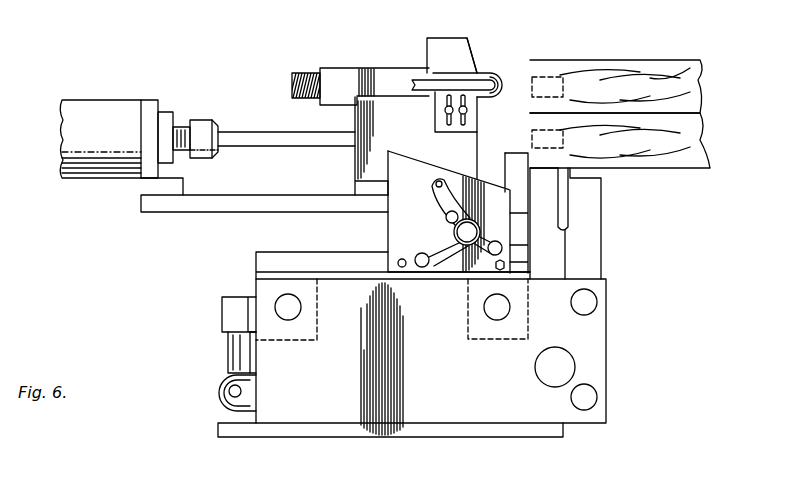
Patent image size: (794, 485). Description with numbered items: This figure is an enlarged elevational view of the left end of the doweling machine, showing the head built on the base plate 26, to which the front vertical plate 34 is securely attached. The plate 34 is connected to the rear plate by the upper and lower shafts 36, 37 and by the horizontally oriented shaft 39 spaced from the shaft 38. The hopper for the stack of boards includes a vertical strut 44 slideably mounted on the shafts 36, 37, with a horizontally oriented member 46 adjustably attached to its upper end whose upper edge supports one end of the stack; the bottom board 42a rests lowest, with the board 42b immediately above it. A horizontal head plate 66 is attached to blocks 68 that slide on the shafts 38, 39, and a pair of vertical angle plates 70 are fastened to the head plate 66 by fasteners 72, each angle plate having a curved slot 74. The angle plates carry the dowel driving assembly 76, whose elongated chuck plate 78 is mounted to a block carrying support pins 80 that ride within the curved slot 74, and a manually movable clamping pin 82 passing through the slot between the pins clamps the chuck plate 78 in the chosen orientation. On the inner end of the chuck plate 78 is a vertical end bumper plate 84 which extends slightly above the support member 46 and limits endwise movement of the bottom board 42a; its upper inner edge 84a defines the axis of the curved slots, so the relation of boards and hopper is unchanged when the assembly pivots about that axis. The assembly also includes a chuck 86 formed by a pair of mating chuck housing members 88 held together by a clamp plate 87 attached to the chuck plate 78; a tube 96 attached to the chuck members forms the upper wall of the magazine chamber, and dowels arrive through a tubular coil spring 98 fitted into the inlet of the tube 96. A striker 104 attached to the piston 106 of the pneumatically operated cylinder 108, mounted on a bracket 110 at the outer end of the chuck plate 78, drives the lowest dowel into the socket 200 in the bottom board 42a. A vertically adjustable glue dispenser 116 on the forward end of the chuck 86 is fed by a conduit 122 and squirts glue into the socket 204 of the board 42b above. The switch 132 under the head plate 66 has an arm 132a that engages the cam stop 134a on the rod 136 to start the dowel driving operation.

The base plate 26 is at (545, 438).
The front vertical plate 34 is at (597, 345).
The upper shaft 36 is at (597, 302).
The lower shaft 37 is at (597, 397).
The shaft 38 is at (301, 305).
The horizontally oriented shaft 39 is at (510, 307).
The bottom board 42a is at (690, 170).
The board 42b is at (667, 60).
The vertical strut 44 is at (598, 219).
The horizontally oriented member 46 is at (598, 178).
The head plate 66 is at (297, 252).
The blocks 68 is at (293, 344).
The vertical angle plates 70 is at (388, 233).
The fasteners 72 is at (506, 265).
The curved slot 74 is at (435, 185).
The dowel driving assembly 76 is at (341, 66).
The chuck plate 78 is at (245, 196).
The support pins 80 is at (502, 248).
The clamping pin 82 is at (454, 233).
The end bumper plate 84 is at (505, 165).
The upper inner edge 84a is at (527, 153).
The chuck 86 is at (445, 40).
The clamp plate 87 is at (355, 182).
The chuck housing members 88 is at (470, 40).
The tube 96 is at (385, 58).
The tubular coil spring 98 is at (306, 72).
The striker 104 is at (282, 120).
The piston 106 is at (183, 128).
The pneumatically operated cylinder 108 is at (100, 102).
The bracket 110 is at (147, 185).
The glue dispenser 116 is at (490, 73).
The conduit 122 is at (430, 92).
The switch 132 is at (220, 302).
The arm 132a is at (232, 340).
The cam stop 134a is at (228, 375).
The rod 136 is at (242, 391).
The socket 200 is at (565, 141).
The socket 204 is at (552, 78).